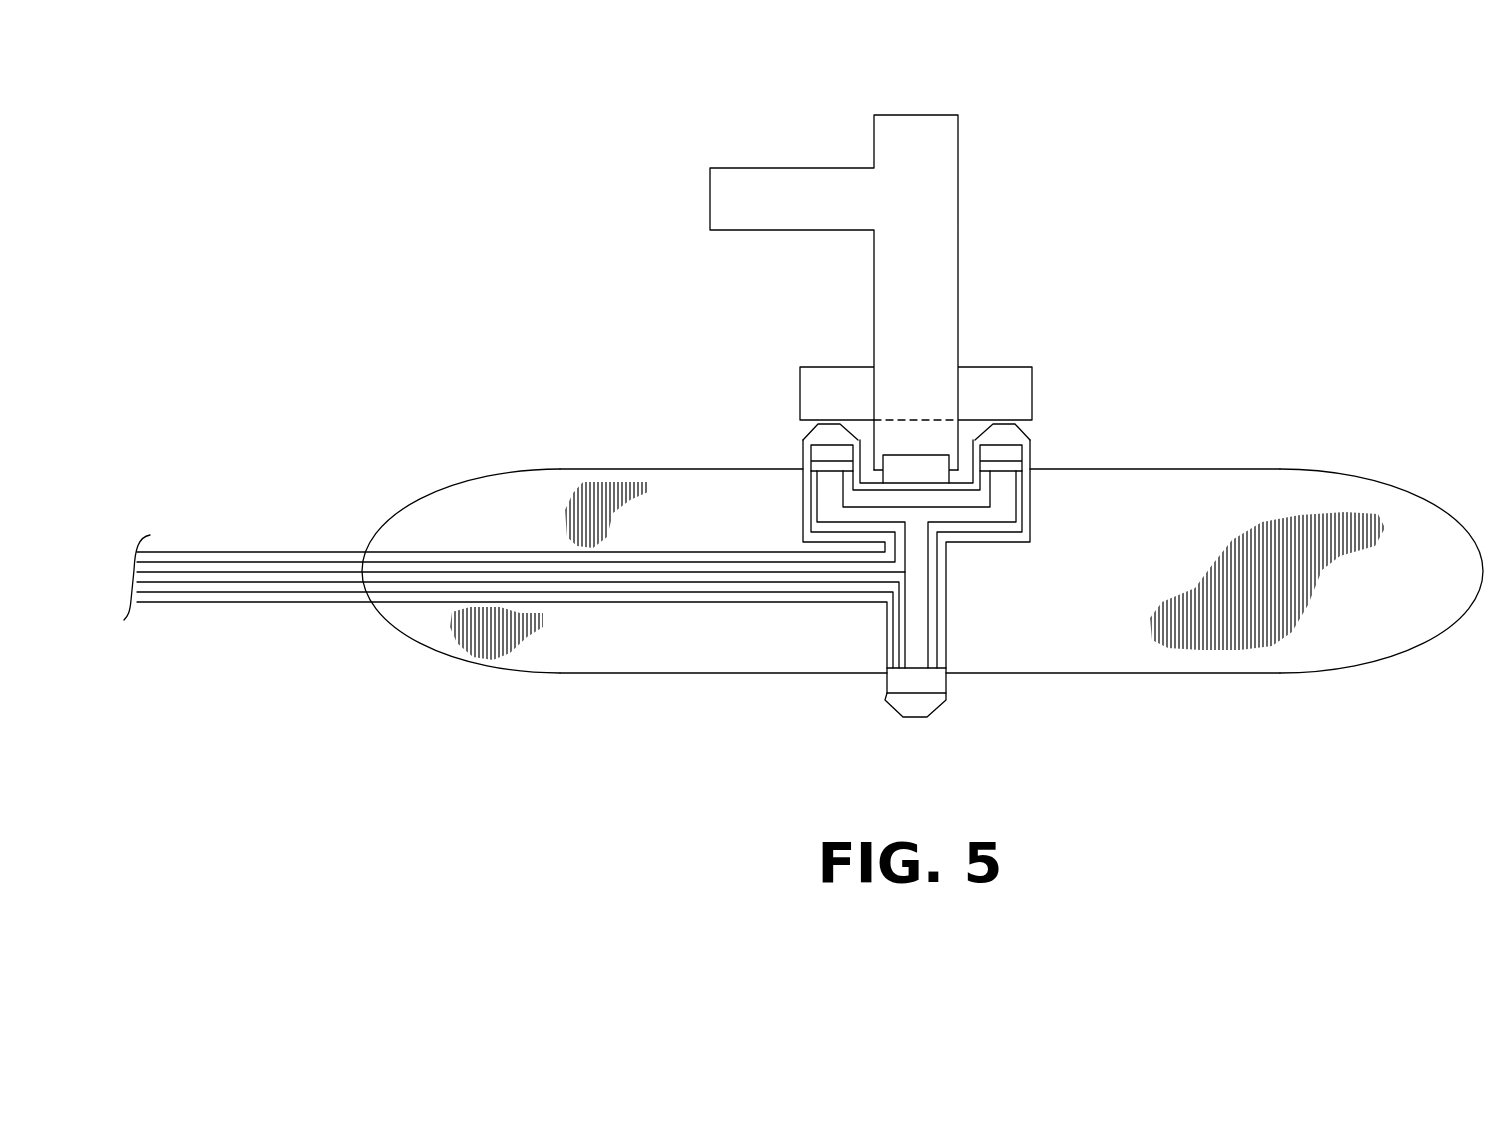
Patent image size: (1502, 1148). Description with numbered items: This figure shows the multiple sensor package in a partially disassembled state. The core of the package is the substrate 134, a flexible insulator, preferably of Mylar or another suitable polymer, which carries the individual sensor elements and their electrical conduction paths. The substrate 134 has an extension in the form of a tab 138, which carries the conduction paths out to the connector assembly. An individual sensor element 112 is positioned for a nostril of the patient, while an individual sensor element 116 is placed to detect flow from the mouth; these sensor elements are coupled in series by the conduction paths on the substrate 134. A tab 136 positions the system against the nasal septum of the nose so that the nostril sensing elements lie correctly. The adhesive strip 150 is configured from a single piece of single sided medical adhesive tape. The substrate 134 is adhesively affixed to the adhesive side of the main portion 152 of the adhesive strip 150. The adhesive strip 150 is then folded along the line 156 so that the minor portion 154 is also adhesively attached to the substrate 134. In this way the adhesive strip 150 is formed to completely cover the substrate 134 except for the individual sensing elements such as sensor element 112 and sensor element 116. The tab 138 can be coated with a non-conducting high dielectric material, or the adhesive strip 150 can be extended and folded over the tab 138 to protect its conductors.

The minor portion 154 is at (937, 163).
The fold line 156 is at (908, 415).
The tab 136 is at (912, 472).
The individual sensor element 112 is at (1010, 453).
The substrate 134 is at (952, 532).
The tab 138 is at (203, 553).
The individual sensor element 116 is at (912, 683).
The adhesive strip 150 is at (1152, 578).
The main portion 152 is at (1130, 657).